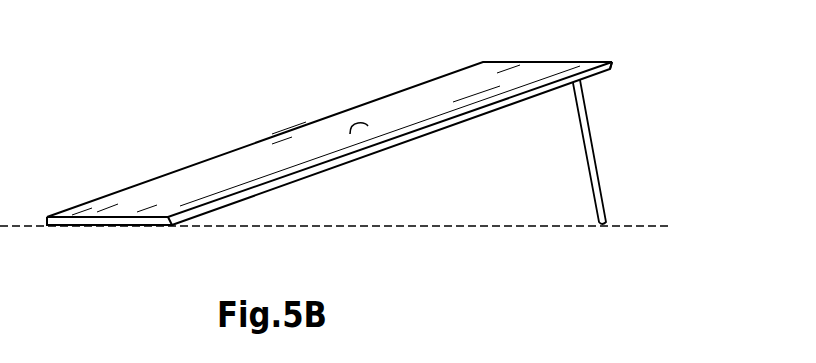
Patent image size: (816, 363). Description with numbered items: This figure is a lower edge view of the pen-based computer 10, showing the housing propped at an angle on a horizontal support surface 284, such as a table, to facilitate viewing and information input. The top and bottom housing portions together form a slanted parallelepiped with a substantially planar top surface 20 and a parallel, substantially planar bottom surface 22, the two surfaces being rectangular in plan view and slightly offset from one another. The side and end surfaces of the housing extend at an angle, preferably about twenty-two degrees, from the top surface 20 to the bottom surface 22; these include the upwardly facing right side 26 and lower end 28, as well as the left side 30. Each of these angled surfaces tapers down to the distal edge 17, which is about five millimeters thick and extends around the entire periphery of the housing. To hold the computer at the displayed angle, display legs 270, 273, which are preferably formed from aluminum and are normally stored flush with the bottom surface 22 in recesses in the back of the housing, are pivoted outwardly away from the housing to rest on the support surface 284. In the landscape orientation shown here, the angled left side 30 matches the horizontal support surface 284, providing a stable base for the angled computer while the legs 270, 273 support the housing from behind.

The ramp assembly 10 is at (396, 134).
The distal edge 17 is at (613, 65).
The top surface 20 is at (243, 147).
The bottom surface 22 is at (372, 154).
The right side 26 is at (532, 62).
The lower end 28 is at (350, 125).
The left side 30 is at (110, 227).
The display leg 270 is at (659, 152).
The display leg 273 is at (597, 152).
The horizontal support surface 284 is at (497, 227).